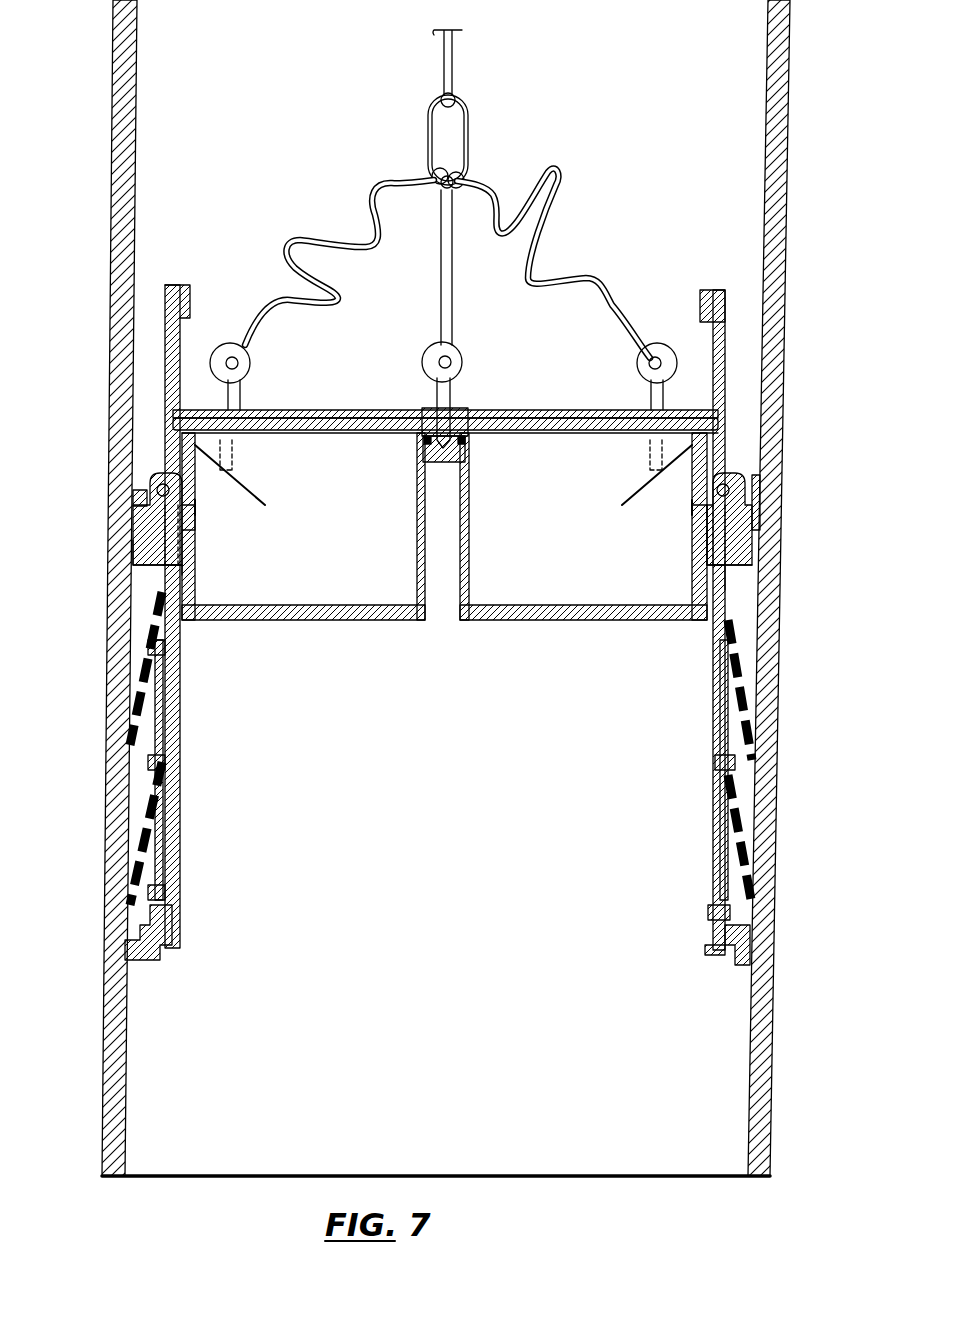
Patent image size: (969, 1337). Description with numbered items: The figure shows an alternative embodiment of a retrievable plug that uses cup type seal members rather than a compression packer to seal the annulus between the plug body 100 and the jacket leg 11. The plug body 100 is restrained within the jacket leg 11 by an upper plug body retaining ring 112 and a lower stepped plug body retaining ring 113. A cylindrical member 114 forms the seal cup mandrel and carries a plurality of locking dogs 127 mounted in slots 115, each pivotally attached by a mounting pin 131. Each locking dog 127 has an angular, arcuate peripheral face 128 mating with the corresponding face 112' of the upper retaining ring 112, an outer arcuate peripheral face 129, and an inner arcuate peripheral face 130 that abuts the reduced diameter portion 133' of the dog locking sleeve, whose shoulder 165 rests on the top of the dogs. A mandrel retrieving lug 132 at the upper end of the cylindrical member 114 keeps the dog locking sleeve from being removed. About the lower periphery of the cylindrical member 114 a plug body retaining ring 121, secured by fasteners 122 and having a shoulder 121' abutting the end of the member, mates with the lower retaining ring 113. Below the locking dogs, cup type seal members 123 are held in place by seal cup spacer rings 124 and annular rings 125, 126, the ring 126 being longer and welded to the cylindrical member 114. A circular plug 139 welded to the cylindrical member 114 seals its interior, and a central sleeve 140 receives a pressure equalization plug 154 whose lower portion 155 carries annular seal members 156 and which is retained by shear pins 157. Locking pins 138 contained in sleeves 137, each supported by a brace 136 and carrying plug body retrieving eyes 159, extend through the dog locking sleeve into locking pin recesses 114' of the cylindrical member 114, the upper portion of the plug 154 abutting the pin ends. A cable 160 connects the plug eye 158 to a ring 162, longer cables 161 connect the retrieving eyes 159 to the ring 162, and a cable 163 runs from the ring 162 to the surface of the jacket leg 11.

The jacket leg 11 is at (785, 42).
The plug body 100 is at (516, 146).
The upper plug body retaining ring 112 is at (769, 515).
The angular, arcuate peripheral face of upper retaining ring 112' is at (795, 502).
The lower plug body retaining ring 113 is at (128, 950).
The cylindrical member 114 is at (689, 620).
The locking pin recesses 114' is at (119, 616).
The slots 115 is at (728, 577).
The plug body retaining ring 121 is at (776, 941).
The shoulder 121' is at (680, 936).
The fasteners 122 is at (740, 915).
The cup type seal members 123 is at (756, 702).
The seal cup spacer rings 124 is at (712, 712).
The annular ring 125 is at (722, 782).
The annular ring 126 is at (160, 598).
The locking dogs 127 is at (740, 568).
The angular, arcuate peripheral face 128 is at (150, 508).
The outer arcuate peripheral face 129 is at (135, 548).
The inner arcuate peripheral face 130 is at (186, 560).
The mounting pin 131 is at (140, 488).
The mandrel retrieving lug 132 is at (706, 292).
The reduced diameter portion 133' is at (225, 527).
The brace 136 is at (692, 506).
The sleeves 137 is at (340, 411).
The locking pins 138 is at (276, 411).
The circular plug 139 is at (562, 622).
The sleeve 140 is at (470, 548).
The pressure equalization plug 154 is at (460, 410).
The lower portion 155 is at (430, 462).
The annular seal members 156 is at (424, 444).
The shear pins 157 is at (466, 444).
The plug eye 158 is at (460, 356).
The plug body retrieving eyes 159 is at (248, 370).
The cable 160 is at (452, 302).
The cables 161 is at (562, 180).
The ring 162 is at (468, 140).
The cable 163 is at (452, 60).
The shoulder 165 is at (200, 510).